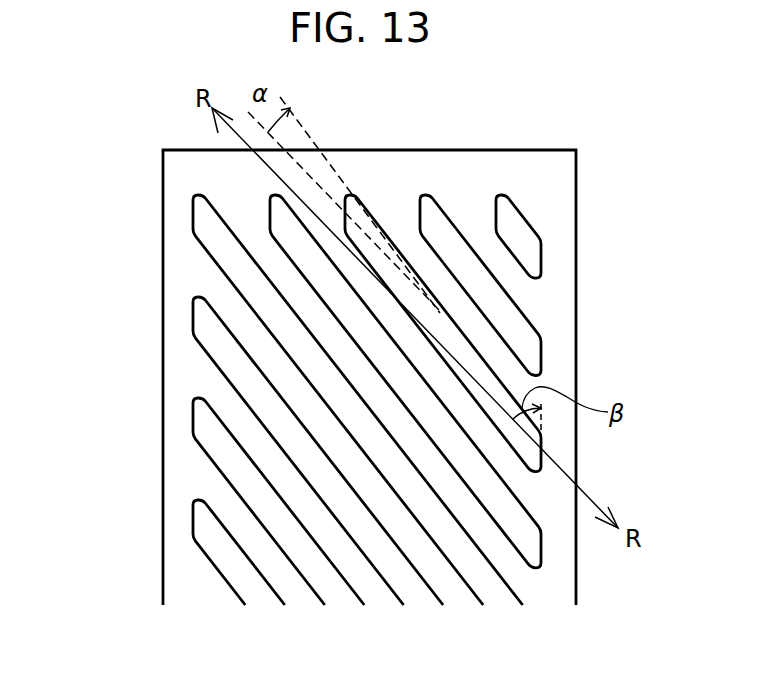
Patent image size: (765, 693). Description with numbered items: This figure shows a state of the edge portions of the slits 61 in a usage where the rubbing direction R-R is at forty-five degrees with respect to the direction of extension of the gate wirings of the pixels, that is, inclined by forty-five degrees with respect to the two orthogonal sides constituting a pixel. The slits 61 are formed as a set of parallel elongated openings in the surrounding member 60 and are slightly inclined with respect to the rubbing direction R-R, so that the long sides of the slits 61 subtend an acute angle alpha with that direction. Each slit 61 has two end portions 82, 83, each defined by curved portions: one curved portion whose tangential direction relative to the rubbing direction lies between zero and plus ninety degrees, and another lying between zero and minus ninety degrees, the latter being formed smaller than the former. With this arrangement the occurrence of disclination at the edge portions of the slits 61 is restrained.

The plate member 60 is at (162, 306).
The slit 61 is at (426, 344).
The groove end portion 82 is at (543, 363).
The groove end portion 83 is at (420, 198).